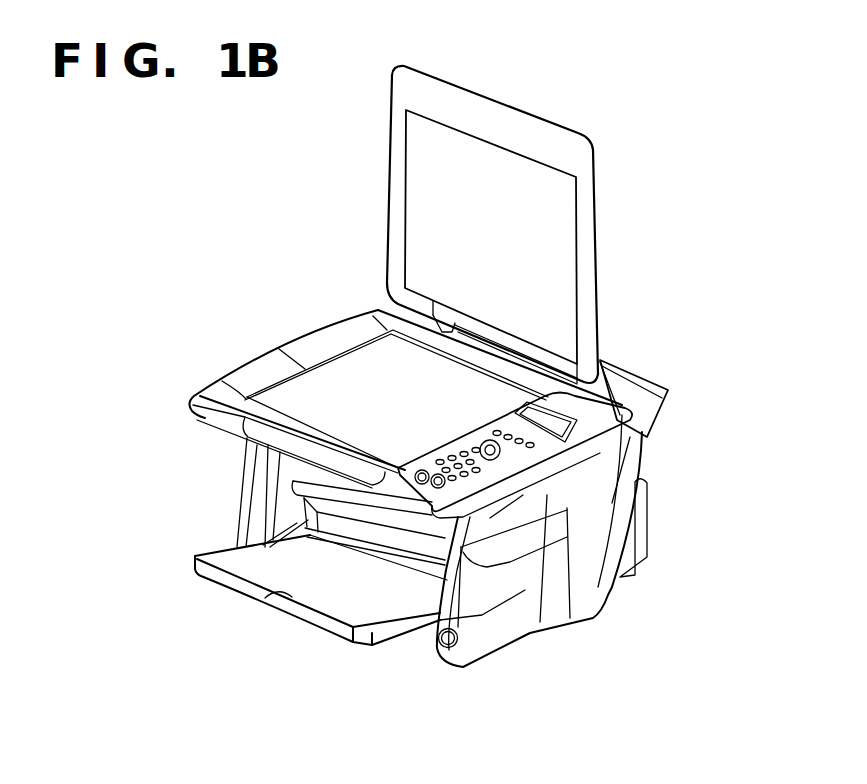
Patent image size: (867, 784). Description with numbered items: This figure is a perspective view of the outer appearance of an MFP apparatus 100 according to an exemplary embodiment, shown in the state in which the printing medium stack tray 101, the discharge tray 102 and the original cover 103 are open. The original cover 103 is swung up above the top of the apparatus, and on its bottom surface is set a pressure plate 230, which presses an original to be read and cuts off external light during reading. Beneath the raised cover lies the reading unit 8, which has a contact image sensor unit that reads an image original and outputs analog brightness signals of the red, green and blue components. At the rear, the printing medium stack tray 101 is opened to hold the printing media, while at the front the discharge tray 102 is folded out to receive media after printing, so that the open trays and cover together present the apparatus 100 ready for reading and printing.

The MFP apparatus 100 is at (296, 178).
The original cover 103 is at (585, 258).
The pressure plate 230 is at (542, 212).
The printing medium stack tray 101 is at (632, 387).
The reading unit 8 is at (547, 423).
The discharge tray 102 is at (322, 599).